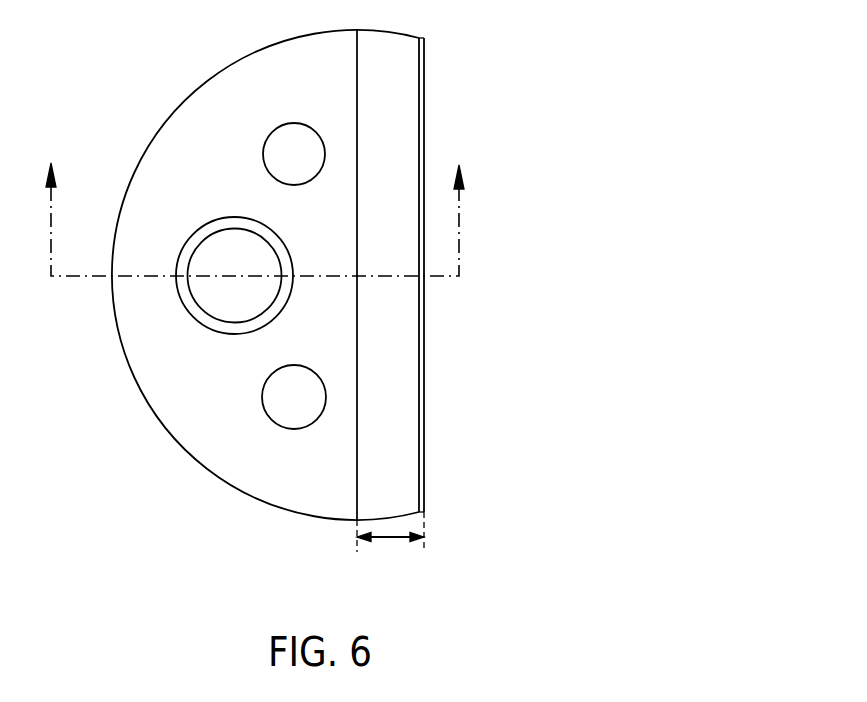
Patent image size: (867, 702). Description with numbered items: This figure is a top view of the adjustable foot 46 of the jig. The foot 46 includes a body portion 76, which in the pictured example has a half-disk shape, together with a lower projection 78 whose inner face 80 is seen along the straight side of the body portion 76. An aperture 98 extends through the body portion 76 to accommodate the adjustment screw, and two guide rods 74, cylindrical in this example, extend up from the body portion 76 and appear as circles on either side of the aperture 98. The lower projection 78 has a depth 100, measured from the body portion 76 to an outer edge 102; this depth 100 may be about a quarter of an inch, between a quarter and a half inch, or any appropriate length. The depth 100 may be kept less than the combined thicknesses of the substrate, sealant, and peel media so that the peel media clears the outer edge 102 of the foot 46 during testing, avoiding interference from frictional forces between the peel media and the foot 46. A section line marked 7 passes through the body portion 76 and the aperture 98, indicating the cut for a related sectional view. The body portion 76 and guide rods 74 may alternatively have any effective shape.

The adjustable foot 46 is at (496, 95).
The section line 7- 7 is at (255, 204).
The guide rods 74 is at (282, 159).
The body portion 76 is at (152, 167).
The lower projection 78 is at (402, 429).
The inner face 80 is at (401, 104).
The aperture 98 is at (213, 297).
The depth 100 is at (390, 538).
The outer edge 102 is at (425, 332).